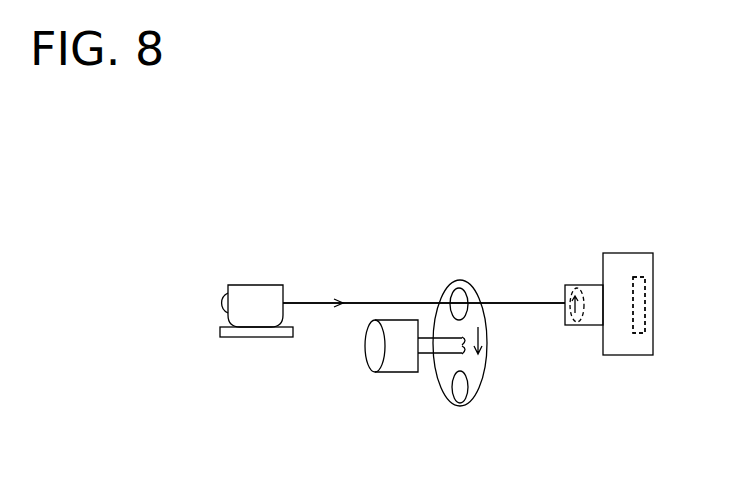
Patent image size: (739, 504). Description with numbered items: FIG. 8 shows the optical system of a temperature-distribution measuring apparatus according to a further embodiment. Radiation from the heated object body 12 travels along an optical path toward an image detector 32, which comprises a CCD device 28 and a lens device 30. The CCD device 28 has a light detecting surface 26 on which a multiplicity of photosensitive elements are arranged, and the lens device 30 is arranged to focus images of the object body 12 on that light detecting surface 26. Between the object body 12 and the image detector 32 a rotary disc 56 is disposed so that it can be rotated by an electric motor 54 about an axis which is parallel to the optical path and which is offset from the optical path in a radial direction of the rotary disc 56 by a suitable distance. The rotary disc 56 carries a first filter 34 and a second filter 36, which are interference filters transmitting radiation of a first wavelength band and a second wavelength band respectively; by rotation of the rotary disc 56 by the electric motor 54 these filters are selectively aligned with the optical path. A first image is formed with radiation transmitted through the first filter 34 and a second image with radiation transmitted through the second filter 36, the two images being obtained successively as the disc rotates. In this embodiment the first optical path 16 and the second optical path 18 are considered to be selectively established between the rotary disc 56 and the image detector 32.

The object body 12 is at (248, 297).
The first optical path 16 is at (525, 303).
The second optical path 18 is at (525, 303).
The light detecting surface 26 is at (632, 322).
The CCD device 28 is at (645, 299).
The lens device 30 is at (570, 295).
The image detector 32 is at (645, 343).
The first filter 34 is at (455, 290).
The second filter 36 is at (458, 400).
The electric motor 54 is at (375, 357).
The rotary disc 56 is at (445, 380).